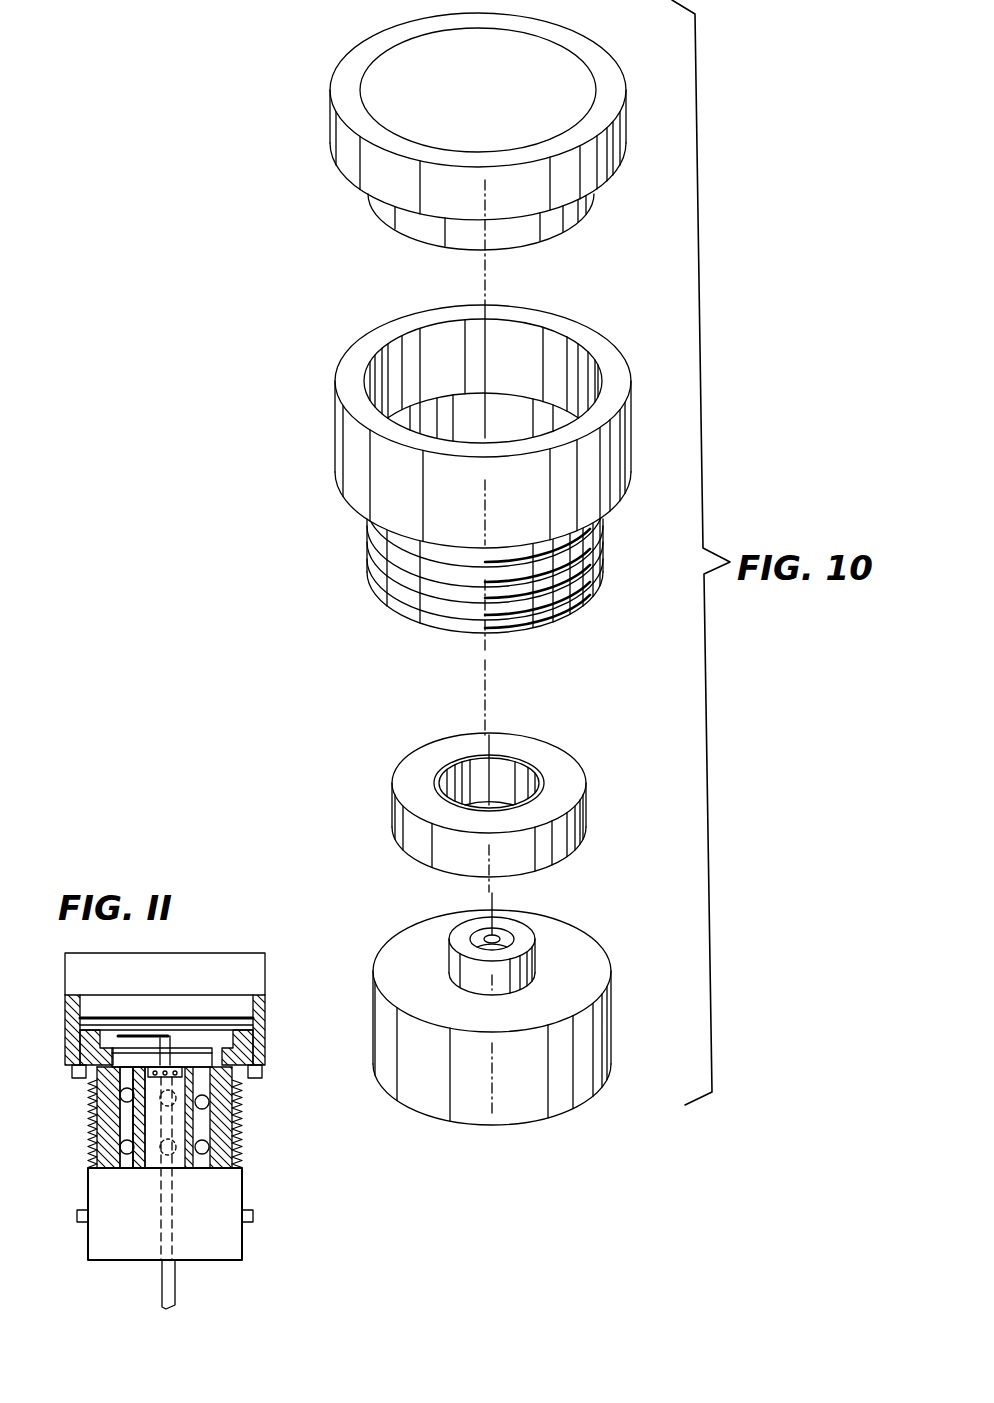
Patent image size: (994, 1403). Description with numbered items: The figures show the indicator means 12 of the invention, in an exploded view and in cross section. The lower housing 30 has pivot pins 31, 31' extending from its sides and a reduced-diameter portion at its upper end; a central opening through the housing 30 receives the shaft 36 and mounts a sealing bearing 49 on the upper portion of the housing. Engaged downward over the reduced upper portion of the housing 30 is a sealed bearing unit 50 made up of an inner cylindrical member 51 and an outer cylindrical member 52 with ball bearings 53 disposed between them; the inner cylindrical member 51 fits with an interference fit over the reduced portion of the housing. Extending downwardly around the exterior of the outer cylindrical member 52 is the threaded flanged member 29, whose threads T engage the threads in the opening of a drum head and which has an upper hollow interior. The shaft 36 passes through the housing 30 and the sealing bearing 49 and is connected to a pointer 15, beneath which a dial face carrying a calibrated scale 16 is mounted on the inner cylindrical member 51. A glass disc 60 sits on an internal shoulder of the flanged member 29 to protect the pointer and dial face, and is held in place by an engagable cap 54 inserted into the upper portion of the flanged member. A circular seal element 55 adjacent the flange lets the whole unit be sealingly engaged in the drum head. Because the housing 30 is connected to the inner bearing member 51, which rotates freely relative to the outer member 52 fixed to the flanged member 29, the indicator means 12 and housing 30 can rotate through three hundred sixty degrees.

In FIG. 10, the engagable cap 54 is at (627, 113).
In FIG. 11, the engagable cap 54 is at (265, 968).
In FIG. 10, the threaded flanged member 29 is at (632, 423).
In FIG. 11, the threaded flanged member 29 is at (265, 1050).
In FIG. 10, the threads T is at (603, 562).
In FIG. 11, the threads T is at (238, 1118).
In FIG. 10, the sealed bearing unit 50 is at (520, 788).
In FIG. 10, the inner cylindrical member 51 is at (512, 760).
In FIG. 11, the inner cylindrical member 51 is at (138, 1168).
In FIG. 10, the outer cylindrical member 52 is at (572, 758).
In FIG. 11, the outer cylindrical member 52 is at (118, 1169).
In FIG. 10, the sealing bearing 49 is at (512, 933).
In FIG. 10, the lower housing 30 is at (520, 1017).
In FIG. 11, the lower housing 30 is at (242, 1188).
In FIG. 11, the glass disc 60 is at (252, 1024).
In FIG. 11, the circular seal element 55 is at (72, 1079).
In FIG. 11, the pointer 15 is at (133, 1035).
In FIG. 11, the indicator means 12 is at (182, 1060).
In FIG. 11, the calibrated scale 16 is at (207, 1052).
In FIG. 11, the ball bearings 53 is at (127, 1154).
In FIG. 11, the pivot pin 31 is at (63, 1233).
In FIG. 11, the pivot pin 31' is at (279, 1232).
In FIG. 11, the shaft 36 is at (175, 1275).